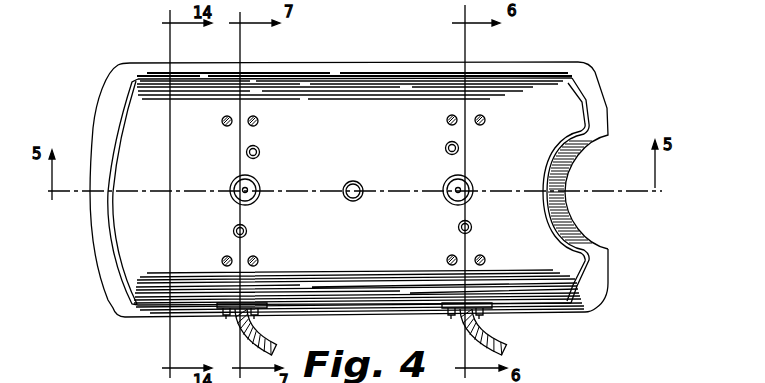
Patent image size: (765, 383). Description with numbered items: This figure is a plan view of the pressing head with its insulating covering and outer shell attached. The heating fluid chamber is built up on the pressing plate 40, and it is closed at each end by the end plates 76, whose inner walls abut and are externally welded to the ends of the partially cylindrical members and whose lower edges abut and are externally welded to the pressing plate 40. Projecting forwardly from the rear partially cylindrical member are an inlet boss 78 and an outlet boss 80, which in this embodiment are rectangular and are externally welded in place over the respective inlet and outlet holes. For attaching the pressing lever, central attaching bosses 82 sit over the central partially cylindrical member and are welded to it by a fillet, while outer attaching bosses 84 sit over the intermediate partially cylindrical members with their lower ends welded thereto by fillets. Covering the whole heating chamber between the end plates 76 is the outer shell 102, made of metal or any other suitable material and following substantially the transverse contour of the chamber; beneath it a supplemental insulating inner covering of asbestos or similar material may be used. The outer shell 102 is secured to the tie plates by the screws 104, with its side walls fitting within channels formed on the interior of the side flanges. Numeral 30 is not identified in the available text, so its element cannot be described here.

The housing 30 is at (613, 86).
The pressing plate 40 is at (600, 253).
The end plates 76 is at (120, 263).
The inlet boss 78 is at (443, 308).
The outlet boss 80 is at (223, 312).
The central pressing lever attaching bosses 82 is at (260, 183).
The outer attaching bosses 84 is at (260, 149).
The outer shell 102 is at (130, 273).
The screws 104 is at (258, 118).